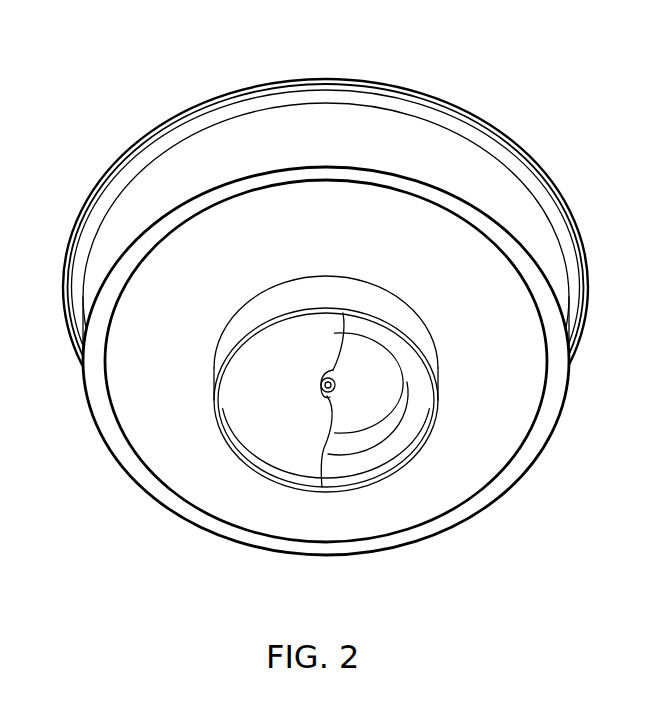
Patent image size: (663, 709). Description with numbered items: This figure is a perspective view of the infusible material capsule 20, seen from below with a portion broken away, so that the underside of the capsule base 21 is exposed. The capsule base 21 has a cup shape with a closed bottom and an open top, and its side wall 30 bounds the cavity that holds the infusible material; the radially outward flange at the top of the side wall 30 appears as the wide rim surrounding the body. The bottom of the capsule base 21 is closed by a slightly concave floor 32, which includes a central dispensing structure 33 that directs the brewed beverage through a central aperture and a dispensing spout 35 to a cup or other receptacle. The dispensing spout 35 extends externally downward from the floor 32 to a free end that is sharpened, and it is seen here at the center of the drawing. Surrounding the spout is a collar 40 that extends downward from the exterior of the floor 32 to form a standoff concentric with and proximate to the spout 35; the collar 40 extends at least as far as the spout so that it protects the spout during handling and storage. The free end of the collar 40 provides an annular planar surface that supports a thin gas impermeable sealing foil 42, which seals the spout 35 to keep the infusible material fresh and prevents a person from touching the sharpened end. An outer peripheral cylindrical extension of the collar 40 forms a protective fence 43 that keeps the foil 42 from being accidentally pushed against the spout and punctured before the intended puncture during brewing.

The infusible material capsule 20 is at (560, 112).
The capsule base 21 is at (397, 135).
The side wall 30 is at (133, 209).
The floor 32 is at (142, 375).
The central dispensing structure 33 is at (207, 445).
The dispensing spout 35 is at (334, 396).
The collar 40 is at (418, 412).
The sealing foil 42 is at (298, 457).
The fence 43 is at (354, 479).